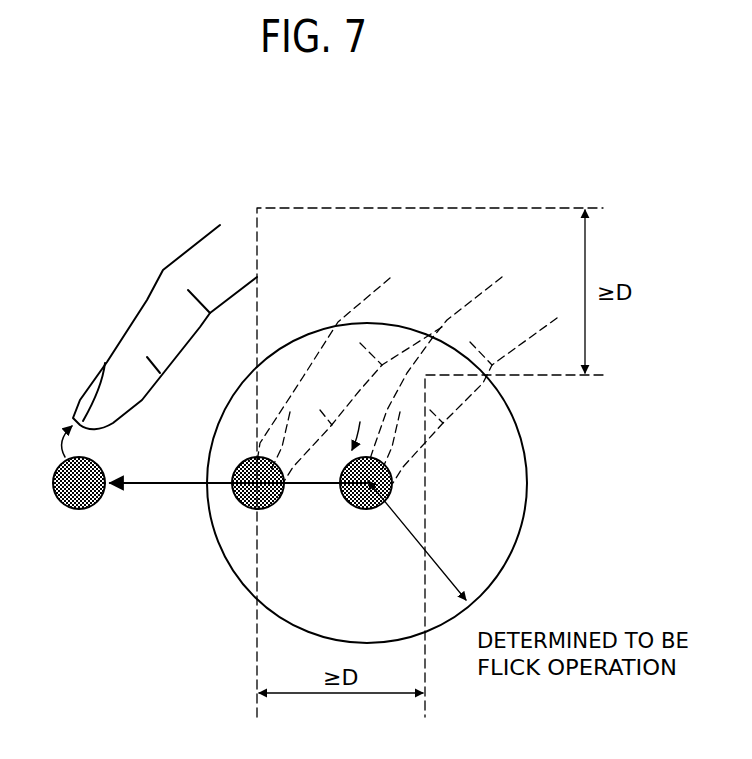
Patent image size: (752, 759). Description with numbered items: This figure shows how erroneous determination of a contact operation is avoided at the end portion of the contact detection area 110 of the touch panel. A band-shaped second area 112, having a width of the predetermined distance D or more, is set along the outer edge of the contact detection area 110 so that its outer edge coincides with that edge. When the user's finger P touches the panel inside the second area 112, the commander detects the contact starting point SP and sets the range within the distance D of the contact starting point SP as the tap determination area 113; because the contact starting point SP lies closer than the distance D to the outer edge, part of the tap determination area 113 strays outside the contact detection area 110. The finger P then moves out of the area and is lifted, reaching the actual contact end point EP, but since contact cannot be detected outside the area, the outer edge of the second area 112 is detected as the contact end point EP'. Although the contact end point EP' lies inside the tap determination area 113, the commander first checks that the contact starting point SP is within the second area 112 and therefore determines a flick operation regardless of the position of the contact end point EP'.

The contact detection area 110 is at (278, 210).
The second area 112 is at (346, 238).
The tap determination area 113 is at (527, 478).
The finger P is at (147, 302).
The contact starting point SP is at (358, 503).
The contact end point EP is at (79, 524).
The contact end point EP' is at (224, 522).
The predetermined distance D is at (417, 540).